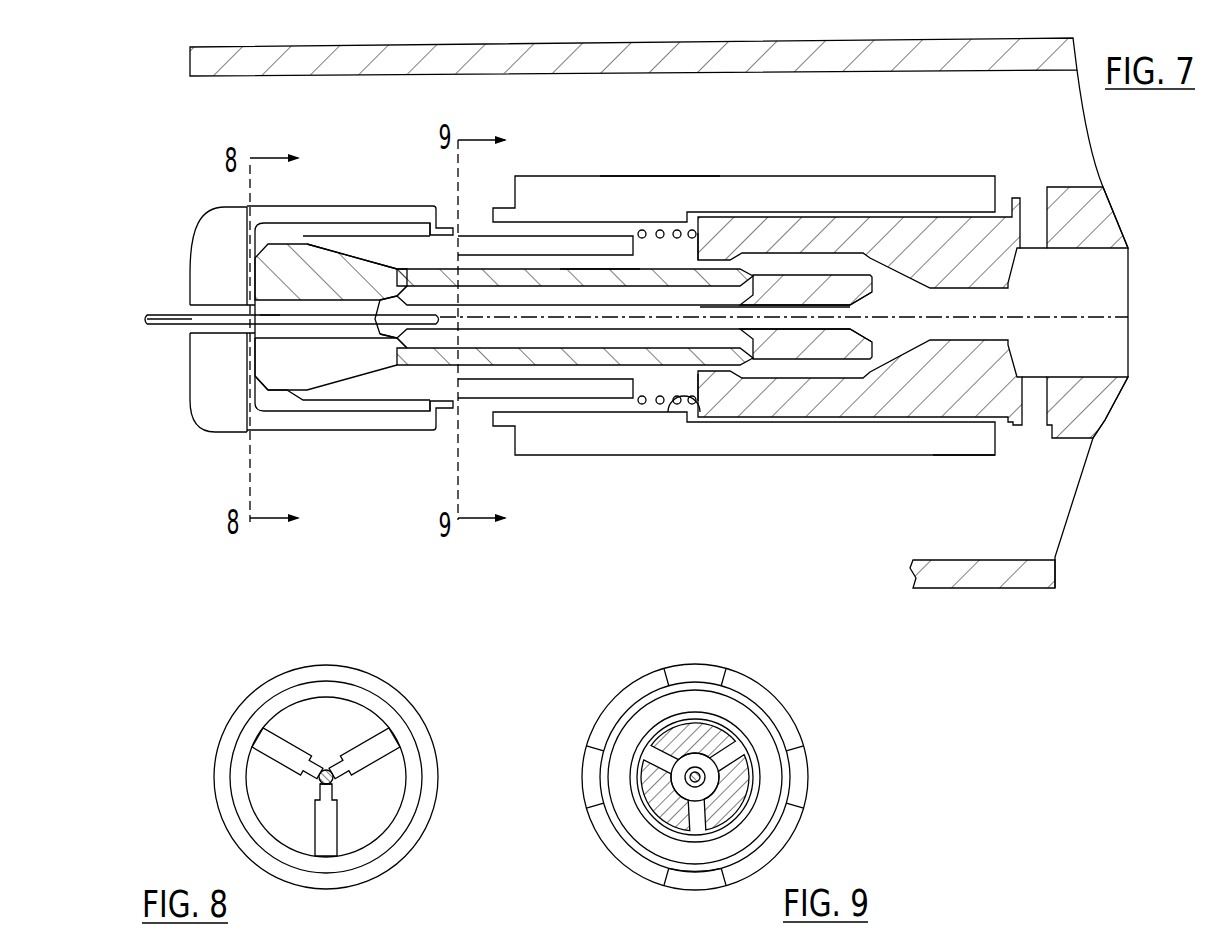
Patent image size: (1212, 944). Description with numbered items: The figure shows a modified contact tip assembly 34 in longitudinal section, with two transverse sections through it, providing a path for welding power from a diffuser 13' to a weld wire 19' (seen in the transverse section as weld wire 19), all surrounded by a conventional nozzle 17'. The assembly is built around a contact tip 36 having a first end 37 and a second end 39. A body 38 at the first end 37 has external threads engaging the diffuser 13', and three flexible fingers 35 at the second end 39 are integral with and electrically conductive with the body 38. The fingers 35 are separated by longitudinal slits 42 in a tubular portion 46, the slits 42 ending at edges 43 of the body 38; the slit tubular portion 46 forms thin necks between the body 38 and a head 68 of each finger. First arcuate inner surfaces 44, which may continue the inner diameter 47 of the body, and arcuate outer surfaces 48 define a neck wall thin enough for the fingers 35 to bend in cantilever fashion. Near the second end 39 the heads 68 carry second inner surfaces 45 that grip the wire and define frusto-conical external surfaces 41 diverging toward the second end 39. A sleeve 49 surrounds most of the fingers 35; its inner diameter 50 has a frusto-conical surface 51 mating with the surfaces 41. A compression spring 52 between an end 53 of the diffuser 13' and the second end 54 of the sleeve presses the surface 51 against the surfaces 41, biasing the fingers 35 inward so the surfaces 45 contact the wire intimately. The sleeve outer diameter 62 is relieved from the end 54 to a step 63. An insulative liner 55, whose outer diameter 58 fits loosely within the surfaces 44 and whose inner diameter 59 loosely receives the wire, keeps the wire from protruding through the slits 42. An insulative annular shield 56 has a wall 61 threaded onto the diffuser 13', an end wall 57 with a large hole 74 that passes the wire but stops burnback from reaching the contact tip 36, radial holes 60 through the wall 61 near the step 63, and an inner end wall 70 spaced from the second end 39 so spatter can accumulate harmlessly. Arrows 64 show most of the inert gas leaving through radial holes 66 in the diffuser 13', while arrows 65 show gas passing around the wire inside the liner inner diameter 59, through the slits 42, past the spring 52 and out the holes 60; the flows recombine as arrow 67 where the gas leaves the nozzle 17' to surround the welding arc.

In FIG. 7, the diffuser 13' is at (1060, 443).
In FIG. 7, the nozzle 17' is at (633, 353).
In FIG. 7, the weld wire 19' is at (258, 290).
In FIG. 8, the weld wire 19 is at (247, 813).
In FIG. 7, the contact tip assembly 34 is at (660, 166).
In FIG. 9, the contact tip assembly 34 is at (815, 817).
In FIG. 7, the flexible fingers 35 is at (295, 423).
In FIG. 7, the contact tip 36 is at (292, 234).
In FIG. 7, the first end 37 is at (870, 346).
In FIG. 7, the body 38 is at (812, 268).
In FIG. 7, the second end 39 is at (253, 278).
In FIG. 7, the frusto-conical external surfaces 41 is at (318, 250).
In FIG. 7, the longitudinal slits 42 is at (577, 355).
In FIG. 8, the longitudinal slits 42 is at (273, 748).
In FIG. 7, the edges 43 is at (652, 360).
In FIG. 9, the first arcuate inner surfaces 44 is at (687, 743).
In FIG. 7, the second inner surfaces 45 is at (275, 312).
In FIG. 8, the second inner surfaces 45 is at (328, 772).
In FIG. 7, the tubular portion 46 is at (562, 280).
In FIG. 7, the inner diameter 47 is at (708, 345).
In FIG. 7, the arcuate outer surfaces 48 is at (598, 278).
In FIG. 7, the sleeve 49 is at (437, 420).
In FIG. 9, the inner diameter 50 is at (752, 772).
In FIG. 7, the frusto-conical surface 51 is at (322, 389).
In FIG. 7, the compression spring 52 is at (663, 232).
In FIG. 7, the end 53 is at (680, 430).
In FIG. 7, the second end 54 is at (647, 232).
In FIG. 7, the liner 55 is at (428, 338).
In FIG. 9, the liner 55 is at (707, 790).
In FIG. 7, the annular shield 56 is at (943, 192).
In FIG. 9, the annular shield 56 is at (785, 723).
In FIG. 7, the end wall 57 is at (207, 382).
In FIG. 7, the outer diameter 58 is at (617, 343).
In FIG. 7, the inner diameter 59 is at (830, 305).
In FIG. 7, the radial holes 60 is at (472, 204).
In FIG. 9, the radial holes 60 is at (690, 882).
In FIG. 7, the wall 61 is at (933, 440).
In FIG. 7, the sleeve outer diameter 62 is at (445, 417).
In FIG. 7, the step 63 is at (437, 233).
In FIG. 7, the arrows 64 is at (1040, 236).
In FIG. 7, the arrows 65 is at (910, 323).
In FIG. 7, the radial holes 66 is at (1036, 236).
In FIG. 7, the arrow 67 is at (293, 98).
In FIG. 7, the head 68 is at (290, 397).
In FIG. 7, the inner end wall 70 is at (275, 388).
In FIG. 7, the hole 74 is at (192, 332).